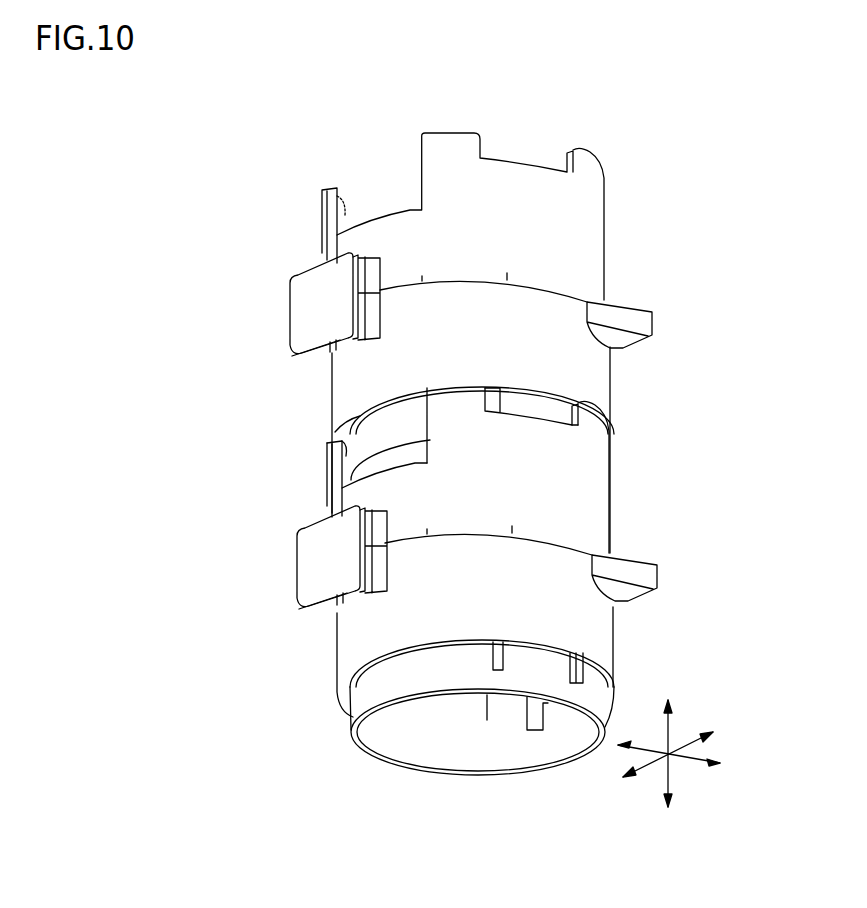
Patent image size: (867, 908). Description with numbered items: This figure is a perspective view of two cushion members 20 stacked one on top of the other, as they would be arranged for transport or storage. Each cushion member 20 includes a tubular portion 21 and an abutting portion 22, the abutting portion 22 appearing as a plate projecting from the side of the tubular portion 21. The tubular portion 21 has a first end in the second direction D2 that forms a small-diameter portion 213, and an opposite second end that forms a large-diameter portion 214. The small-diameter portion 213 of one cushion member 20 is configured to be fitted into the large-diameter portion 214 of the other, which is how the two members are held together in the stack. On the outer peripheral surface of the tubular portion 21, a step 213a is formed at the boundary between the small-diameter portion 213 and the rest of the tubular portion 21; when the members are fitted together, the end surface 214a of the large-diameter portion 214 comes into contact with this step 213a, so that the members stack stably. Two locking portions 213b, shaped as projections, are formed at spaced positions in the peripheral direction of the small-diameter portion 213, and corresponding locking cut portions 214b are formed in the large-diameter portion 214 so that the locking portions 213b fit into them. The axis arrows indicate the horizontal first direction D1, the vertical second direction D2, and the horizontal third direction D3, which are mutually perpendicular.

The cushion member 20 is at (272, 266).
The tubular portion 21 is at (324, 374).
The abutting portion 22 is at (290, 322).
The small-diameter portion 213 is at (380, 425).
The step 213a is at (333, 428).
The locking portions 213b is at (570, 400).
The large-diameter portion 214 is at (327, 465).
The end surface 214a is at (328, 438).
The locking cut portions 214b is at (567, 430).
The first direction D1 is at (645, 745).
The second direction D2 is at (670, 770).
The third direction D3 is at (695, 730).